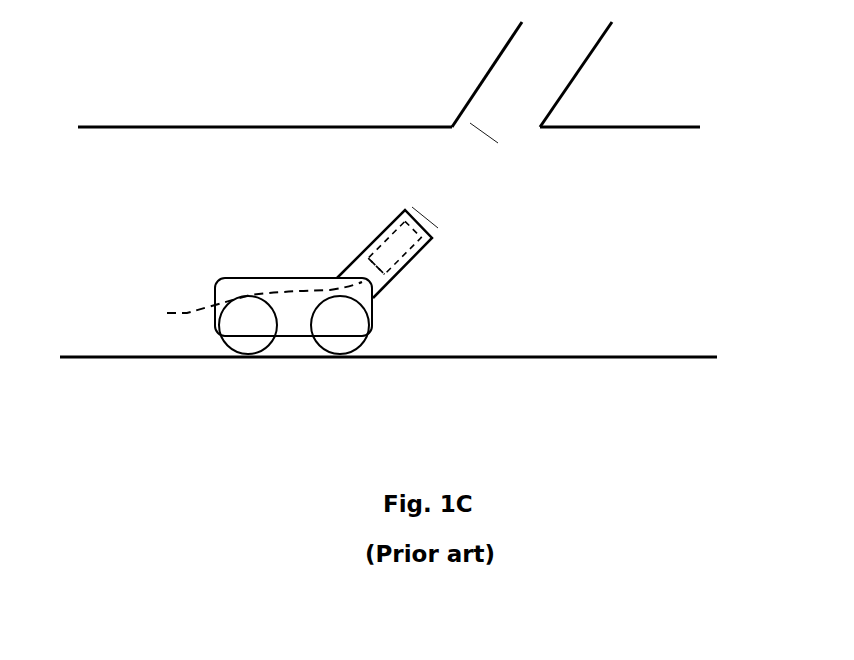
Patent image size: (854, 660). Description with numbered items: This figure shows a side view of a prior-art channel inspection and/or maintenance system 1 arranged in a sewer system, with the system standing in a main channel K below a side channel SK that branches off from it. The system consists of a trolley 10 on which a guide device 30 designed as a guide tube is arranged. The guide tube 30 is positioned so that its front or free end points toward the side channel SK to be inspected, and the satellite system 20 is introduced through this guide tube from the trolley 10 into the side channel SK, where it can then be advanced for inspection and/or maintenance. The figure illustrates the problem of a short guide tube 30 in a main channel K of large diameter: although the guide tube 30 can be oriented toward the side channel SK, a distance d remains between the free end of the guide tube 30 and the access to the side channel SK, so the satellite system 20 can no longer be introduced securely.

The main channel K is at (178, 115).
The side channel SK is at (474, 67).
The distance d is at (480, 139).
The cleaning robot 1 is at (336, 257).
The trolley 10 is at (239, 266).
The satellite system 20 is at (419, 262).
The guide device 30 is at (369, 224).